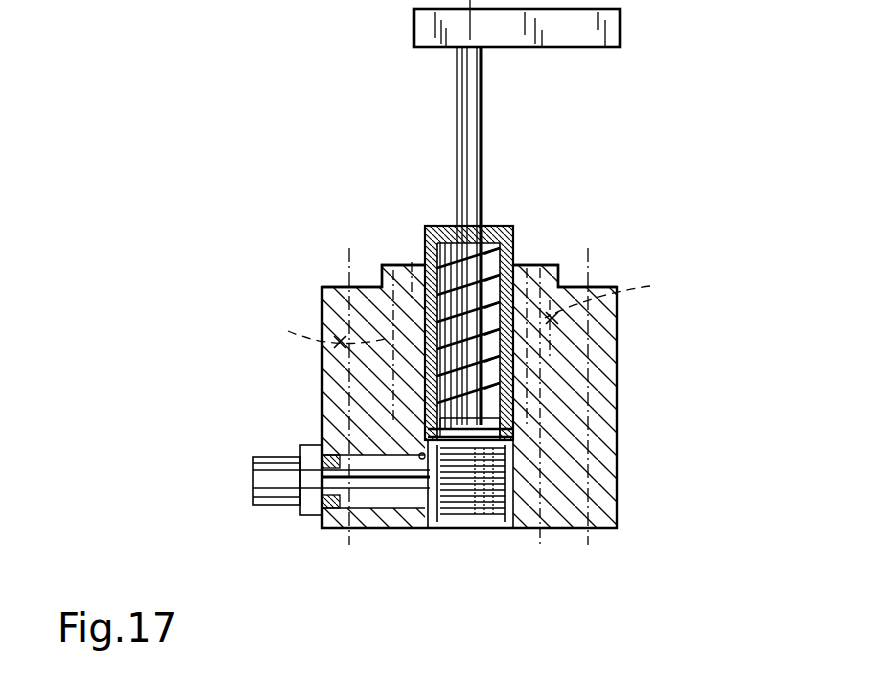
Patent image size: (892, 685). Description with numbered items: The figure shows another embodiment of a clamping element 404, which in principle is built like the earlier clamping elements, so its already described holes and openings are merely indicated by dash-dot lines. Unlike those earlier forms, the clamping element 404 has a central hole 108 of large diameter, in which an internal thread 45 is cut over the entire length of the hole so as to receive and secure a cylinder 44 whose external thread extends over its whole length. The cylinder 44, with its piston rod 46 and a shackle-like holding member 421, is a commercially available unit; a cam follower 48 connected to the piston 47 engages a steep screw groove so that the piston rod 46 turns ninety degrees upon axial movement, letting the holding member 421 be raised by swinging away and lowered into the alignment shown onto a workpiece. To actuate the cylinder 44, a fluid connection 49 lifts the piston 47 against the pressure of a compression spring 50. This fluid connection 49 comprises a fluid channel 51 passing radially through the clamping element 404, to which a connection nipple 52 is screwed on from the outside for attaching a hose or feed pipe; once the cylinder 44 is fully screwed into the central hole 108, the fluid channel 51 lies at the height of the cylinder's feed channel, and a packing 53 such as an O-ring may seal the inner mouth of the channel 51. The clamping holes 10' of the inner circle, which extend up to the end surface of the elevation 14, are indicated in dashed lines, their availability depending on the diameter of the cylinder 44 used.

The holding member 421 is at (622, 30).
The piston rod 46 is at (458, 106).
The compression spring 50 is at (457, 228).
The internal thread 45 is at (406, 270).
The cylinder 44 is at (515, 228).
The elevation 14 is at (558, 273).
The clamping holes 10' is at (472, 309).
The clamping element 404 is at (617, 342).
The cam follower 48 is at (495, 406).
The piston 47 is at (430, 433).
The fluid connection 49 is at (217, 433).
The connection nipple 52 is at (253, 490).
The fluid channel 51 is at (372, 528).
The packing 53 is at (415, 528).
The central hole 108 is at (452, 528).